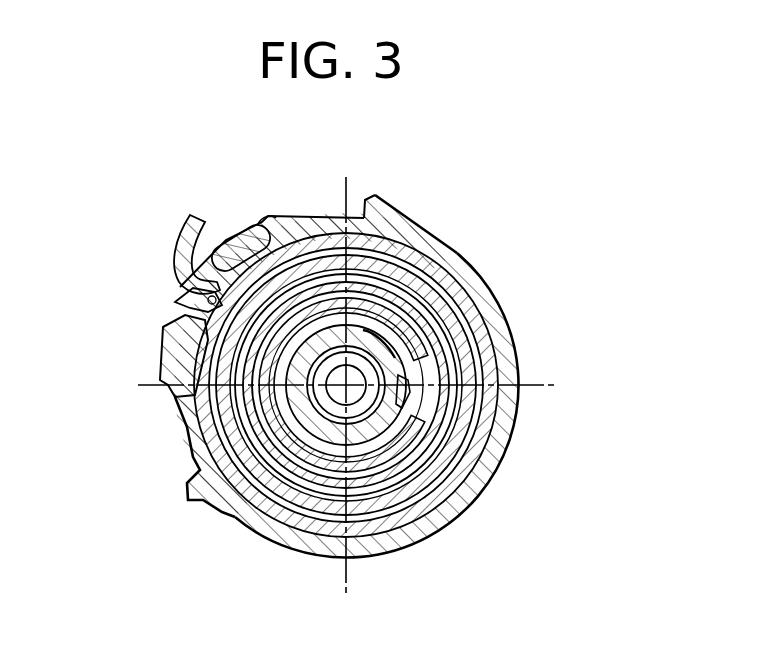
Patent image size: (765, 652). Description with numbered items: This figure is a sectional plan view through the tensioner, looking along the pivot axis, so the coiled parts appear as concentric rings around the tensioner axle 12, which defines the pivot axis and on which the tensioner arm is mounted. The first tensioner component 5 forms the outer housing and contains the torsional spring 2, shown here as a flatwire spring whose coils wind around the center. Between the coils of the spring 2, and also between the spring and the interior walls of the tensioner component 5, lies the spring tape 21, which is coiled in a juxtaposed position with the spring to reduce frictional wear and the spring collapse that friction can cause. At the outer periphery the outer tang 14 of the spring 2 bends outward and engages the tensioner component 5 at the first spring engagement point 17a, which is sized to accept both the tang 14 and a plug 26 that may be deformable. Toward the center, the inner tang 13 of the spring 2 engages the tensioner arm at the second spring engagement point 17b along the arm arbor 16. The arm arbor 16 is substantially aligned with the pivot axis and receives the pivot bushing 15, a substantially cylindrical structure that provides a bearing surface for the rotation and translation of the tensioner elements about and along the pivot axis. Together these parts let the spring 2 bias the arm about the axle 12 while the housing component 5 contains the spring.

The torsional spring 2 is at (246, 240).
The first tensioner component 5 is at (305, 228).
The tensioner axle 12 is at (331, 405).
The inner tang 13 is at (375, 425).
The outer tang 14 is at (186, 227).
The pivot bushing 15 is at (240, 448).
The arm arbor 16 is at (395, 328).
The first spring engagement point 17a is at (173, 338).
The second spring engagement point 17b is at (425, 368).
The spring tape 21 is at (438, 272).
The plug 26 is at (178, 296).